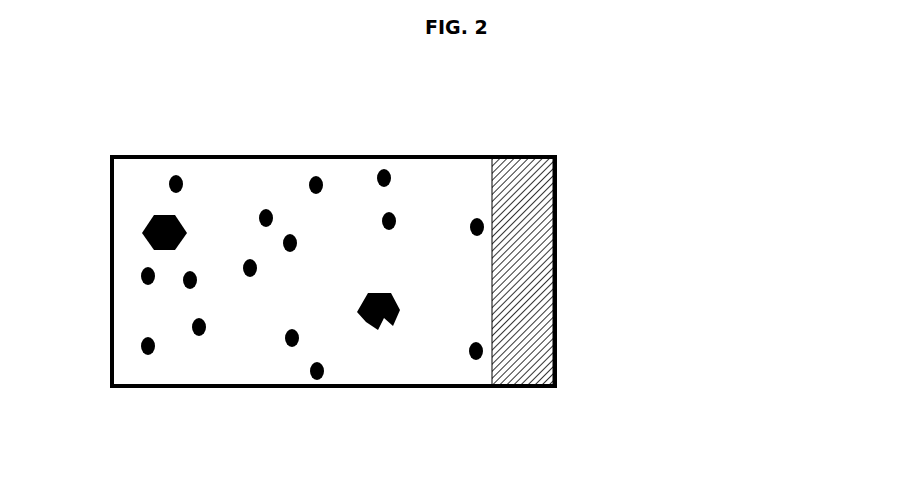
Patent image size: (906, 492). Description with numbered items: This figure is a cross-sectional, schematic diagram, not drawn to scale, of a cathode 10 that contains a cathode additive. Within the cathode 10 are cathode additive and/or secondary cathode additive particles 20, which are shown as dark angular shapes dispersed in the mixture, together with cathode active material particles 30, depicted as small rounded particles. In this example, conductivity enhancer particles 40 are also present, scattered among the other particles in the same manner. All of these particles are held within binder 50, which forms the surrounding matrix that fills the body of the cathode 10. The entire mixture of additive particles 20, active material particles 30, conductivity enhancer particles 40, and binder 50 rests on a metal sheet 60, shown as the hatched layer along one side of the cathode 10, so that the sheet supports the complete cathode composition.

The cathode 10 is at (121, 133).
The cathode additive particles 20 is at (136, 233).
The cathode active material particles 30 is at (326, 192).
The conductivity enhancer particles 40 is at (312, 363).
The binder 50 is at (400, 376).
The metal sheet 60 is at (530, 272).